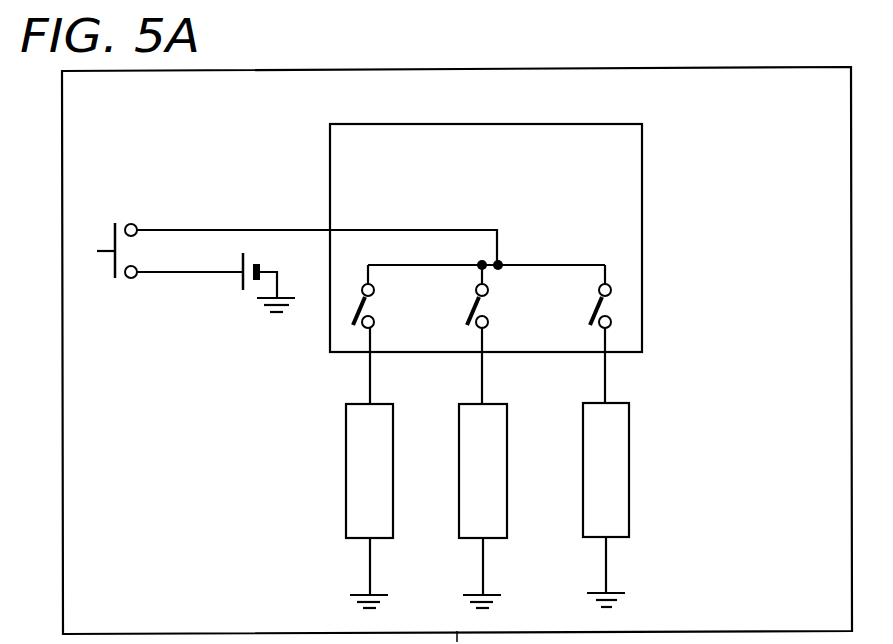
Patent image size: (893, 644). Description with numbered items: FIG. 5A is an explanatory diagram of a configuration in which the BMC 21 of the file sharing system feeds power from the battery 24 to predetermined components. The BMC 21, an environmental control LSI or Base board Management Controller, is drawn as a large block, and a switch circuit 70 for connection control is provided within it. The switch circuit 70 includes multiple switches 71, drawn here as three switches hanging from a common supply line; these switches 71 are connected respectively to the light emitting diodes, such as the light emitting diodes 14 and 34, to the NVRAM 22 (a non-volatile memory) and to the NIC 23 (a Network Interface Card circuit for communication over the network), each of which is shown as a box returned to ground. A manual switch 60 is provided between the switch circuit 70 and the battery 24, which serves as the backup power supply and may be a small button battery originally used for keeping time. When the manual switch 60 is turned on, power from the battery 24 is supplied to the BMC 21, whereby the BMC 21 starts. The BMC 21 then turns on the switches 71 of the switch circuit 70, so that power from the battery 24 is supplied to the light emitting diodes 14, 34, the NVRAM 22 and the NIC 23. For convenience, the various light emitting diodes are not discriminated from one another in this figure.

The manual switch 60 is at (104, 251).
The battery 24 is at (238, 285).
The BMC 21 is at (543, 124).
The switch circuit 70 is at (533, 265).
The switches 71 is at (362, 308).
The light emitting diode 14 is at (305, 468).
The light emitting diode 34 is at (346, 447).
The NVRAM 22 is at (507, 433).
The NIC 23 is at (629, 433).